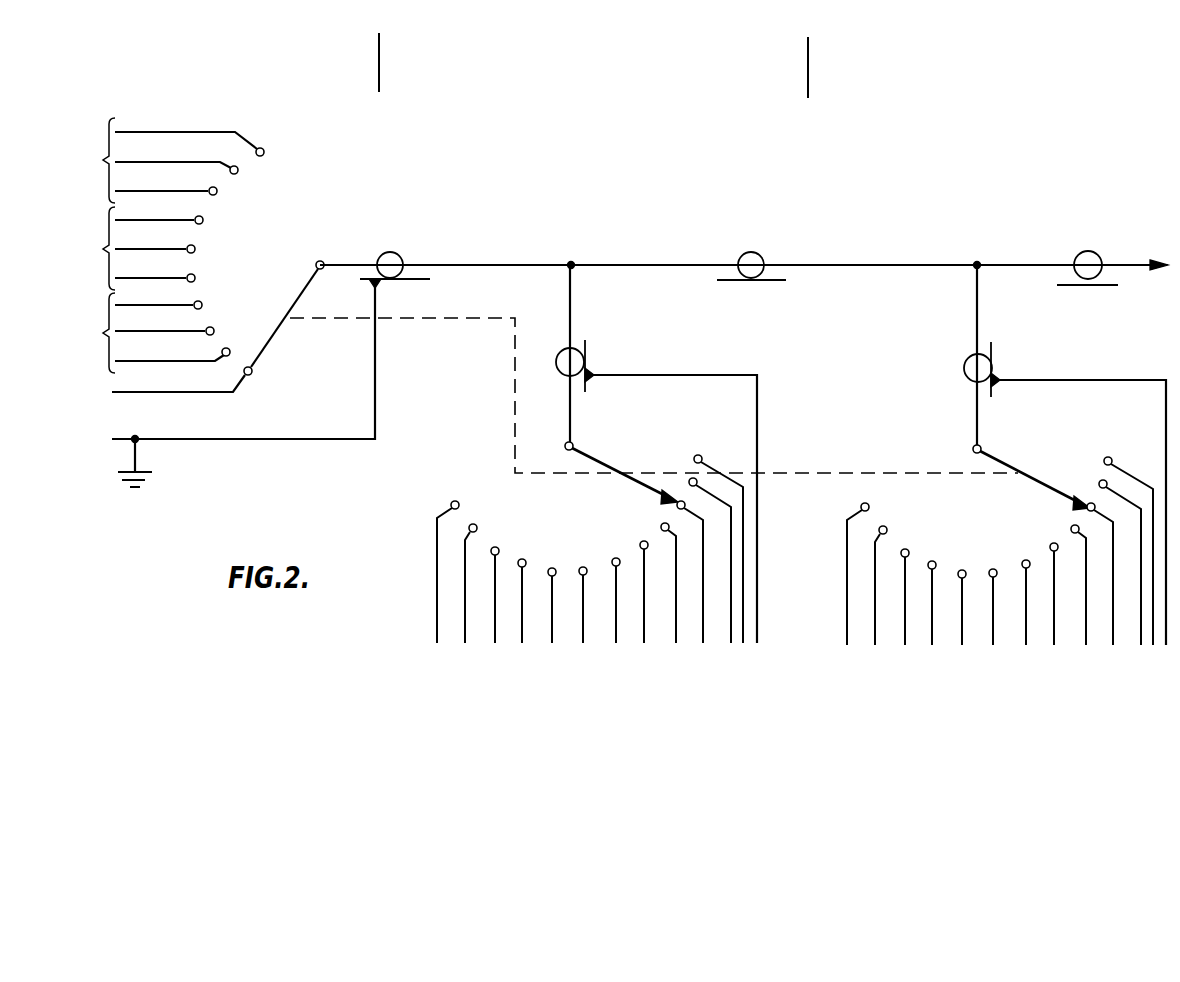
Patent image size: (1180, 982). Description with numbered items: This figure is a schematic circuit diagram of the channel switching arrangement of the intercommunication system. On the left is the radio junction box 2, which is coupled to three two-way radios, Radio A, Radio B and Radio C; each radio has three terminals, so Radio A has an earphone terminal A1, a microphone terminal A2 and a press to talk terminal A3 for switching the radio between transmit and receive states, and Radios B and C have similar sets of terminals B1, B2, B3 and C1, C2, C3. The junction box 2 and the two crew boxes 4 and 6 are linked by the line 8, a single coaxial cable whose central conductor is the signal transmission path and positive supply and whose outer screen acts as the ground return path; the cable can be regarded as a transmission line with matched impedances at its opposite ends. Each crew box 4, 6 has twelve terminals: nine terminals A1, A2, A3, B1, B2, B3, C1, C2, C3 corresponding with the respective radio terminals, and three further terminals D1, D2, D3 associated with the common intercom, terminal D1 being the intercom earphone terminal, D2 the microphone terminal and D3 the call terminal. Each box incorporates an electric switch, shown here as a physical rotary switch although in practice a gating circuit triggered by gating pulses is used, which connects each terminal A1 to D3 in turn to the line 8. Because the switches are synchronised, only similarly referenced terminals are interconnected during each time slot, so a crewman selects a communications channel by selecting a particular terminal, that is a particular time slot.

The radio junction box 2 is at (235, 259).
The crew box 4 is at (585, 136).
The crew box 6 is at (1000, 136).
The line 8 is at (922, 263).
The earphone terminal A1 is at (265, 151).
The microphone terminal A2 is at (239, 169).
The press to talk terminal A3 is at (218, 191).
The earphone terminal B1 is at (204, 220).
The microphone terminal B2 is at (196, 249).
The press to talk terminal B3 is at (196, 278).
The earphone terminal C1 is at (203, 305).
The microphone terminal C2 is at (215, 331).
The press to talk terminal C3 is at (223, 358).
The earphone terminal D1 is at (676, 505).
The microphone terminal D2 is at (689, 480).
The call terminal D3 is at (700, 455).